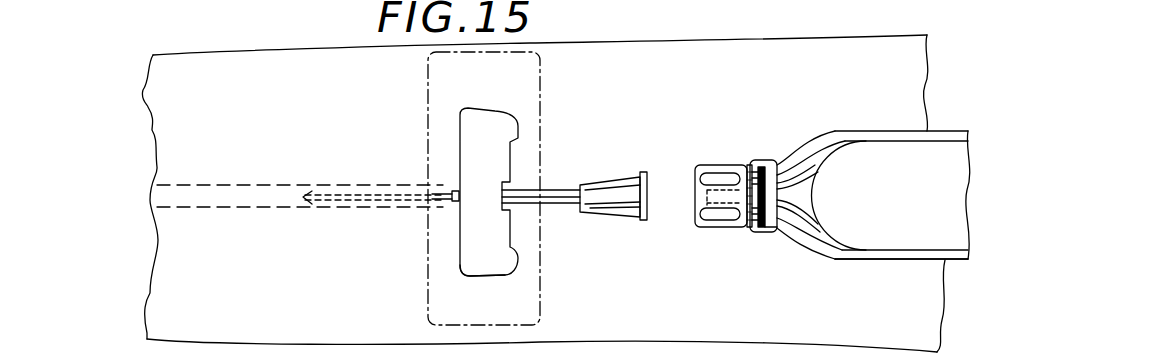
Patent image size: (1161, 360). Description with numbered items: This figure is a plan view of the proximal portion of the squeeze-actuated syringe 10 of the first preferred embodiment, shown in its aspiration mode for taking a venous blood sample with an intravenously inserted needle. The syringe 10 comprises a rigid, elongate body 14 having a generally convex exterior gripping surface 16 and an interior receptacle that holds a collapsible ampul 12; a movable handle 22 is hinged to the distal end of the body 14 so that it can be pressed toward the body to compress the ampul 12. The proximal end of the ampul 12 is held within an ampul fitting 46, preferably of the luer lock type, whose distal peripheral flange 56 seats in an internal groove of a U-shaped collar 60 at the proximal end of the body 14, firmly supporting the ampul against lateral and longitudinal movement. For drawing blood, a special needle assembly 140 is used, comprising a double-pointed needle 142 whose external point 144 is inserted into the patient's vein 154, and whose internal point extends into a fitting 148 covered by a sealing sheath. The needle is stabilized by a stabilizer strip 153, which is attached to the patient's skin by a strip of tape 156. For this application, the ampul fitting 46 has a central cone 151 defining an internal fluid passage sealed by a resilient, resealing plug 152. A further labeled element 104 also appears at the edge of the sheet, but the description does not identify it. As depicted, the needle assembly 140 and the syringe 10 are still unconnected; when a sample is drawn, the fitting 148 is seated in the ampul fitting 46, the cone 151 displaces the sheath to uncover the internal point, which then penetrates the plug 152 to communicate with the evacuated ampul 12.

The squeeze-actuated syringe 10 is at (877, 130).
The collapsible ampul 12 is at (807, 235).
The body 14 is at (848, 253).
The exterior gripping surface 16 is at (558, 195).
The handle 22 is at (892, 206).
The ampul fitting 46 is at (720, 166).
The peripheral flange 56 is at (758, 171).
The U-shaped collar 60 is at (766, 233).
The slide 104 is at (306, 0).
The needle assembly 140 is at (421, 168).
The double-pointed needle 142 is at (450, 197).
The external point 144 is at (316, 200).
The fitting 148 is at (607, 202).
The central cone 151 is at (728, 228).
The resealing plug 152 is at (704, 228).
The stabilizer strip 153 is at (476, 263).
The vein 154 is at (298, 152).
The strip of tape 156 is at (540, 297).